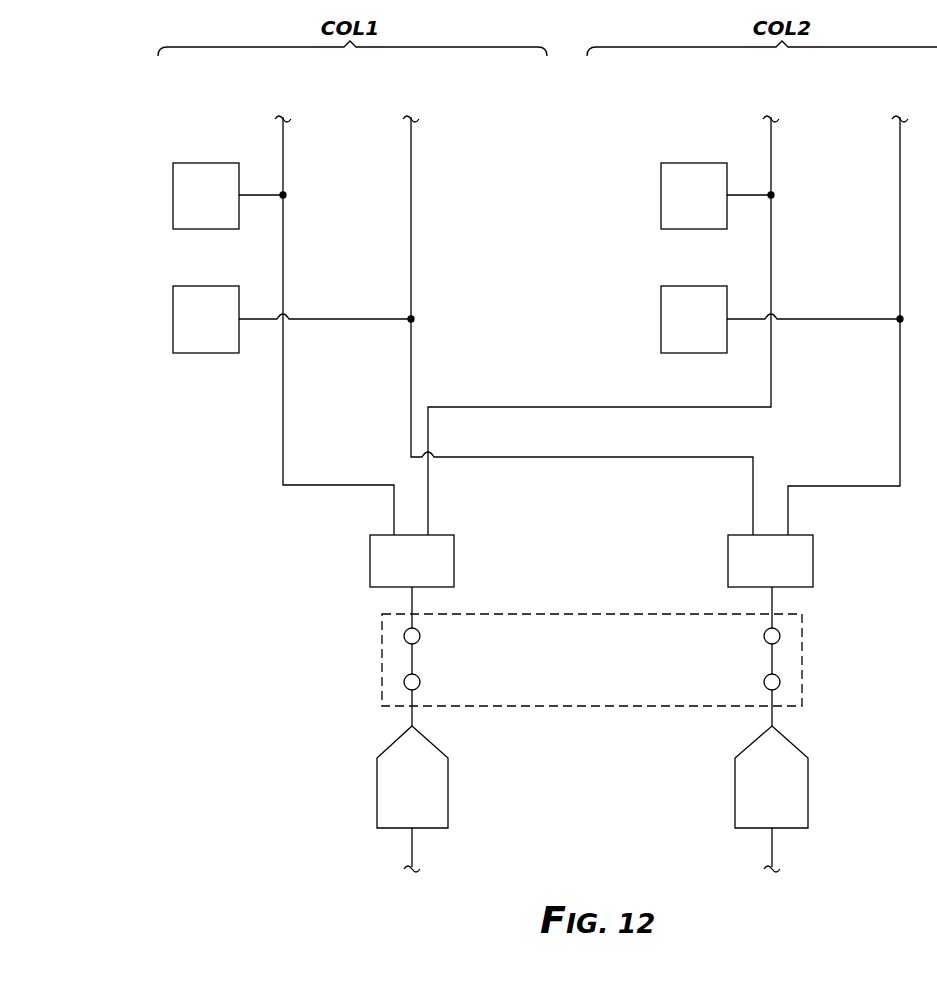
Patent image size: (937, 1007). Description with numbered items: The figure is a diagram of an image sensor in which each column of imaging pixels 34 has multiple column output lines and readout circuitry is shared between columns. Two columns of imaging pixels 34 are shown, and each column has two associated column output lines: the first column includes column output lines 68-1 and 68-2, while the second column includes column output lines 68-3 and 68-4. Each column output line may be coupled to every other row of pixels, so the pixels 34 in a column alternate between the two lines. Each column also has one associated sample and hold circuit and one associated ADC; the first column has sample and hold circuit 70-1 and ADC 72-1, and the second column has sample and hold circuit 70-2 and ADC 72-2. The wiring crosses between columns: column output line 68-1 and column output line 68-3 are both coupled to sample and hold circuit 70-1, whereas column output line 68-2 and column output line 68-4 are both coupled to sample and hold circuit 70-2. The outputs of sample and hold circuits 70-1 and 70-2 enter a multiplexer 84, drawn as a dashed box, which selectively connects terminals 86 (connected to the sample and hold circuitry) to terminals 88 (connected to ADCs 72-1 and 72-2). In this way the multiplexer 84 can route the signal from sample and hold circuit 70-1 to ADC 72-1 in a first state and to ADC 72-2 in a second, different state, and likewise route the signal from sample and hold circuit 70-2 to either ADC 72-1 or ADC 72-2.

The imaging pixel 34 is at (173, 186).
The column output line 68-1 is at (283, 132).
The column output line 68-2 is at (411, 132).
The column output line 68-3 is at (771, 132).
The column output line 68-4 is at (900, 132).
The sample and hold circuit 70-1 is at (370, 556).
The sample and hold circuit 70-2 is at (728, 556).
The ADC 72-1 is at (378, 773).
The ADC 72-2 is at (795, 743).
The multiplexer 84 is at (803, 661).
The terminal 86 is at (421, 636).
The terminal 88 is at (421, 680).